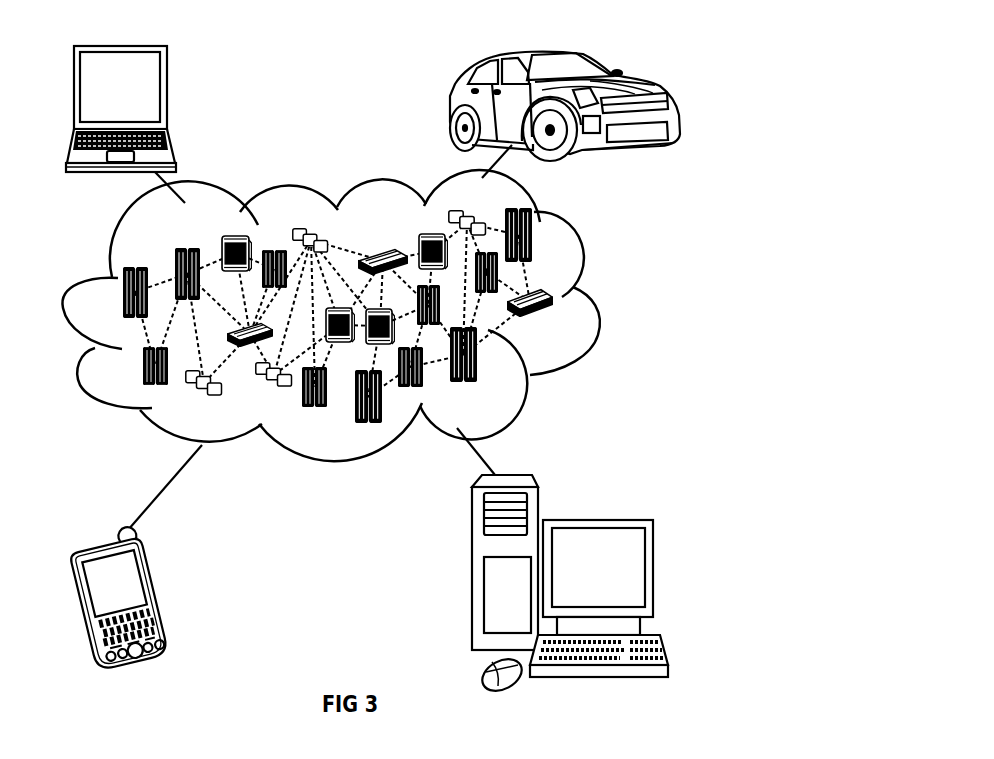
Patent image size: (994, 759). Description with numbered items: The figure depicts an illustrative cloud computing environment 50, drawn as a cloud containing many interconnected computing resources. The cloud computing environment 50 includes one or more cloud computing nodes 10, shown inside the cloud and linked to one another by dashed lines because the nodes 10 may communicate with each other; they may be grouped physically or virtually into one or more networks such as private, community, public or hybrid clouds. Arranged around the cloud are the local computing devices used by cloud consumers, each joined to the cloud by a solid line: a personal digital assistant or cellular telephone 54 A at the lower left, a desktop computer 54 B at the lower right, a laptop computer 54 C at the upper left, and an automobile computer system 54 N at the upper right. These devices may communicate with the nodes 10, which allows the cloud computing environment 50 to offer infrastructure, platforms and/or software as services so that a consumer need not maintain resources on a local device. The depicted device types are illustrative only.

The cloud computing nodes 10 is at (348, 315).
The cloud computing environment 50 is at (599, 300).
The laptop computer 54 C is at (168, 94).
The automobile computer system 54 N is at (450, 108).
The personal digital assistant (PDA) or cellular telephone 54 A is at (160, 590).
The desktop computer 54 B is at (596, 518).